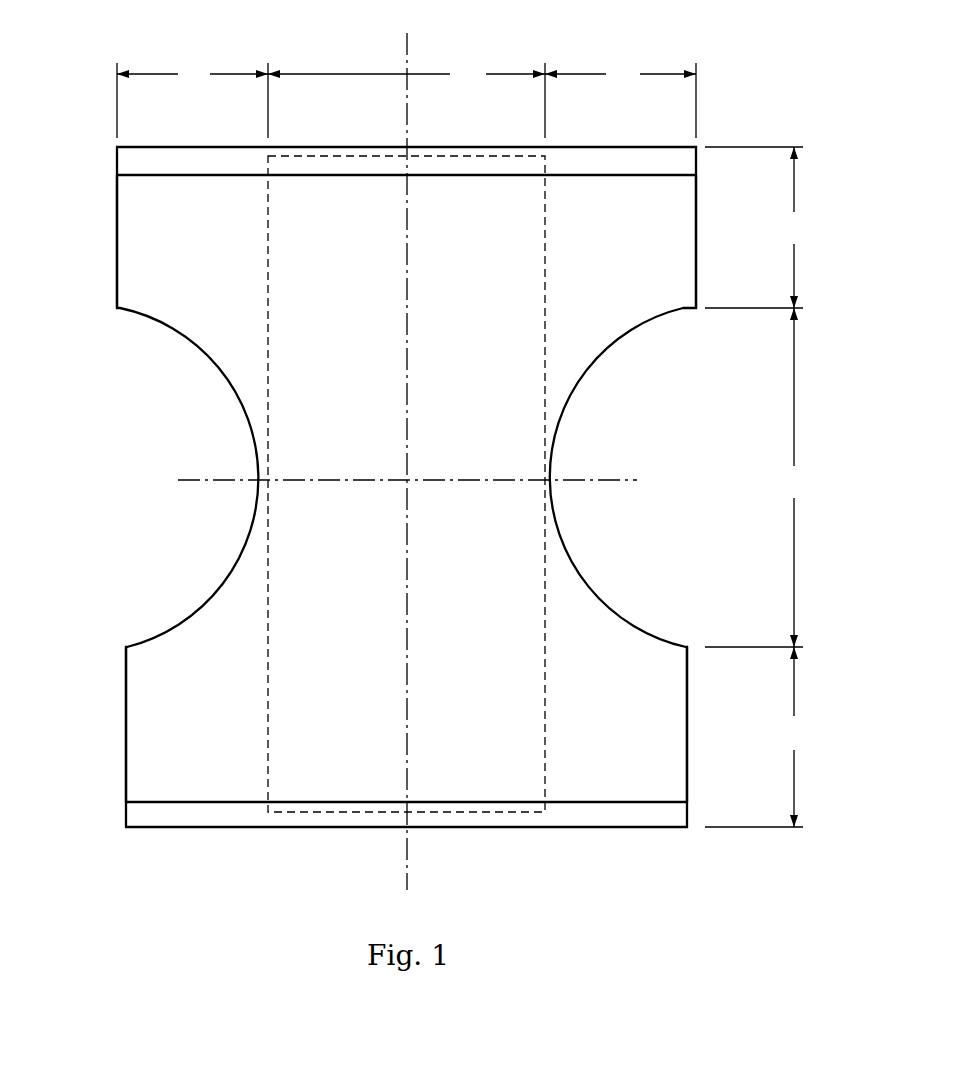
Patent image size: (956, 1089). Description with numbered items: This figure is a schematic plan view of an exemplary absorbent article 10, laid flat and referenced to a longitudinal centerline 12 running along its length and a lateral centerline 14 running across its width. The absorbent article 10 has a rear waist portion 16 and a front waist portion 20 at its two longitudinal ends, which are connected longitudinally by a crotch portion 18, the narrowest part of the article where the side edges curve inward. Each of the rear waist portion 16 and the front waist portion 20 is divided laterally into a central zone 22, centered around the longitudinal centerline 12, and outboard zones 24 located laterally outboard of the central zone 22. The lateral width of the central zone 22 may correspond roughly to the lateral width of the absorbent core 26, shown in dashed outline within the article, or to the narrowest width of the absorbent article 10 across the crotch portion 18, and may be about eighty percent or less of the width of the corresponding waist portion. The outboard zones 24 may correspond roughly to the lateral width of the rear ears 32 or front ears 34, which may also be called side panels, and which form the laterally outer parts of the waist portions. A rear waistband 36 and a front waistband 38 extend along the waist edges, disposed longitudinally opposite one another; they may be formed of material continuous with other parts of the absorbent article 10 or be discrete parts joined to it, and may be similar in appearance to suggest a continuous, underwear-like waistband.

The absorbent article 10 is at (724, 102).
The longitudinal centerline 12 is at (409, 448).
The lateral centerline 14 is at (423, 483).
The rear waist portion 16 is at (796, 227).
The crotch portion 18 is at (796, 477).
The front waist portion 20 is at (794, 737).
The central zone 22 is at (406, 74).
The outboard zones 24 is at (406, 74).
The absorbent core 26 is at (470, 747).
The rear ears 32 is at (163, 190).
The front ears 34 is at (158, 735).
The rear waistband 36 is at (602, 162).
The front waistband 38 is at (200, 812).